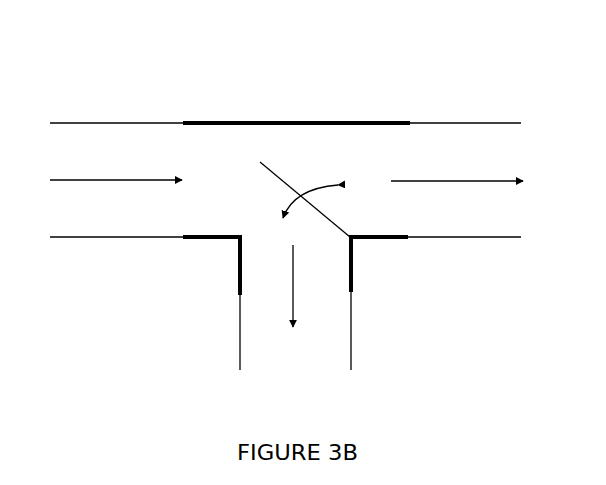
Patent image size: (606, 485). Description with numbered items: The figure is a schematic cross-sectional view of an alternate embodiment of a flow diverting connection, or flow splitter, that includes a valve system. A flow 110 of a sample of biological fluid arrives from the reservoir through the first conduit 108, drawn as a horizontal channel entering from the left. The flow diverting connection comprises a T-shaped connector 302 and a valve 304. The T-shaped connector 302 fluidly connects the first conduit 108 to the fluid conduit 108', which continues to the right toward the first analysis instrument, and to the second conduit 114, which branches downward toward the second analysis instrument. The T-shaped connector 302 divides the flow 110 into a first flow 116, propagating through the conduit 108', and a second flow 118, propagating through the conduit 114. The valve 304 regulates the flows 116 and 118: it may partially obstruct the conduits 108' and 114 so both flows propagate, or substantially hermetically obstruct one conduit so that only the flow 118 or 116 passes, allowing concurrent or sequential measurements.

The first conduit 108 is at (117, 92).
The fluid conduit 108' is at (484, 83).
The T-shaped connector 302 is at (276, 122).
The valve 304 is at (298, 183).
The flow 110 is at (108, 181).
The first flow 116 is at (468, 181).
The second flow 118 is at (293, 255).
The second conduit 114 is at (351, 330).